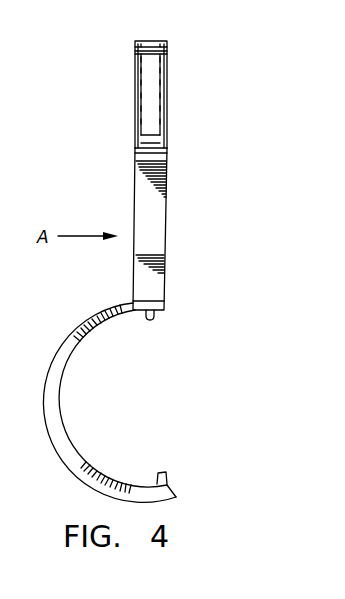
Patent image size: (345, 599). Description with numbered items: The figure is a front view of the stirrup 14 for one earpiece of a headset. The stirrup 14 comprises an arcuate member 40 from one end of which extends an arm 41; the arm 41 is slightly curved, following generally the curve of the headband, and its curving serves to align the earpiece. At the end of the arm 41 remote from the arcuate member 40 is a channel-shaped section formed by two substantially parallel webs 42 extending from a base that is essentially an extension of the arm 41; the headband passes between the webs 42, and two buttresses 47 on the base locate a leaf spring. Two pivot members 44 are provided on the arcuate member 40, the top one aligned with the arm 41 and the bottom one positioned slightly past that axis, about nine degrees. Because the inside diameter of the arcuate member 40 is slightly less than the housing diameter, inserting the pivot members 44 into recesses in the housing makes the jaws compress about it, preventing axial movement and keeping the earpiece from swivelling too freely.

The stirrup 14 is at (133, 303).
The arcuate member 40 is at (52, 392).
The arm 41 is at (155, 233).
The webs 42 is at (135, 95).
The pivot members 44 is at (158, 316).
The buttresses 47 is at (160, 42).